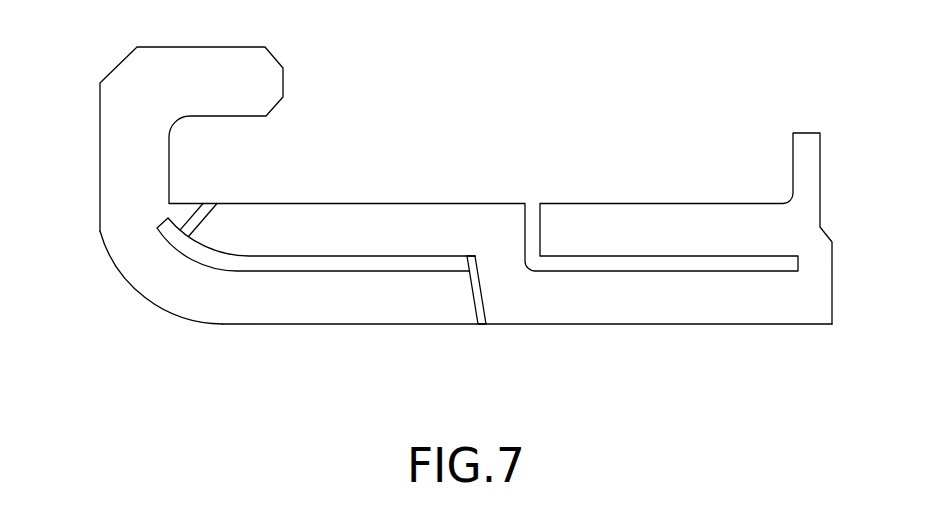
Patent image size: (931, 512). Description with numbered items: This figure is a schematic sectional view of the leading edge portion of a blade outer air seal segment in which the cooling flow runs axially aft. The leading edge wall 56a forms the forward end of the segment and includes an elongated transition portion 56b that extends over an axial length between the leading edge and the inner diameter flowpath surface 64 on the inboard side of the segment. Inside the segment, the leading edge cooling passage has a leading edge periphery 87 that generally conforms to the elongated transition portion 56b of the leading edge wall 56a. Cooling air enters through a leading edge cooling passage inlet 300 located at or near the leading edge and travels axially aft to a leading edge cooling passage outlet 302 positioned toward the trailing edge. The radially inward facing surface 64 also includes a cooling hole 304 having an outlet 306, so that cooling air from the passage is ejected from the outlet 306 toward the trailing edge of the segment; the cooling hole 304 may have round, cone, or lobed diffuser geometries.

The leading edge wall 56a is at (108, 277).
The elongated transition portion 56b is at (150, 300).
The inner diameter flowpath surface 64 is at (632, 325).
The leading edge periphery 87 is at (200, 263).
The leading edge cooling passage inlet 300 is at (205, 223).
The leading edge cooling passage outlet 302 is at (472, 257).
The cooling hole 304 is at (487, 320).
The outlet 306 is at (492, 325).